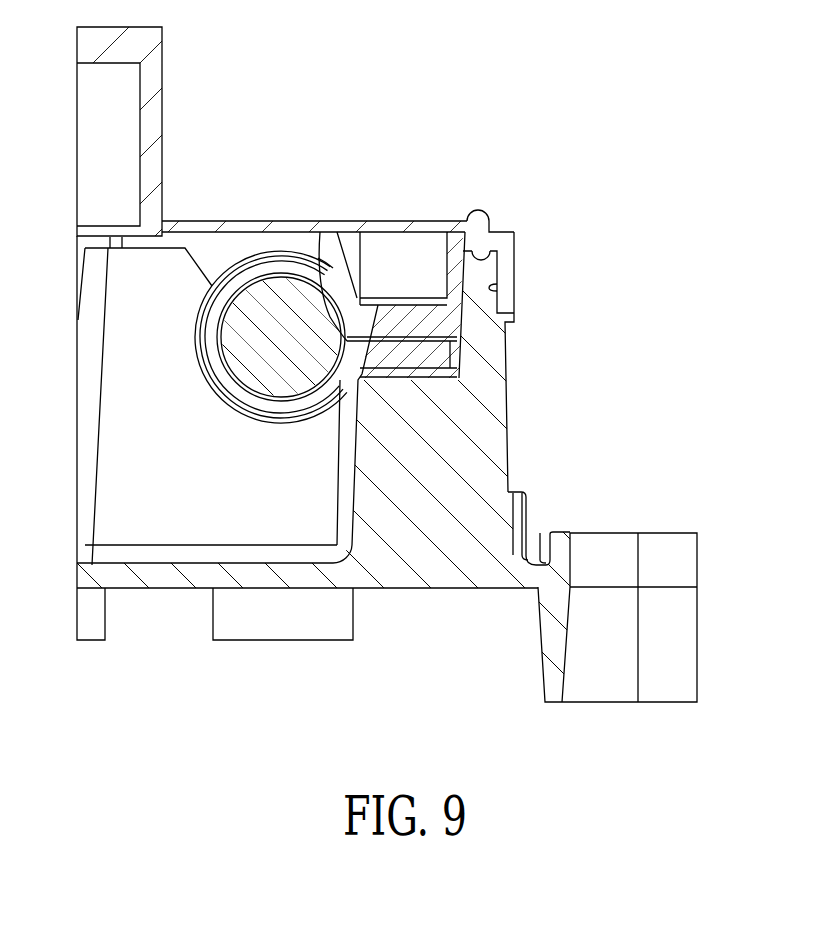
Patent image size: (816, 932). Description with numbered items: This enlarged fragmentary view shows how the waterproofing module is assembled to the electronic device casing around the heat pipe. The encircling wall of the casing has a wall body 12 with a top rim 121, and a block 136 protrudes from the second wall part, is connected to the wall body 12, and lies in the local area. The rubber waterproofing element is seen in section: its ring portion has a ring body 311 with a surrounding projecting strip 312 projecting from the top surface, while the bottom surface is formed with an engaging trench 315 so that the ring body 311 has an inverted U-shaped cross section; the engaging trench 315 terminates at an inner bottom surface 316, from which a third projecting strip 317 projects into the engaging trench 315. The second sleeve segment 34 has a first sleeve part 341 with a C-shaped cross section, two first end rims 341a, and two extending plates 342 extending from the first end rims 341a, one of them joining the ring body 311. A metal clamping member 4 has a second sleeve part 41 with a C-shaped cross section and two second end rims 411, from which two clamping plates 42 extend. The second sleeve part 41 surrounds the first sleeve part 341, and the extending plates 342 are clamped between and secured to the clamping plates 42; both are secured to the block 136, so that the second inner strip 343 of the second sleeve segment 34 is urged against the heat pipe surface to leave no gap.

The clamping member 4 is at (227, 417).
The second sleeve part 41 is at (217, 393).
The second end rims 411 is at (378, 300).
The second sleeve segment 34 is at (267, 257).
The first sleeve part 341 is at (294, 267).
The first end rims 341a is at (333, 262).
The second inner strip 343 is at (224, 274).
The clamping plates 42 is at (397, 297).
The wall body 12 is at (483, 343).
The top rim 121 is at (487, 262).
The block 136 is at (433, 472).
The ring body 311 is at (514, 233).
The surrounding projecting strip 312 is at (494, 236).
The engaging trench 315 is at (488, 288).
The inner bottom surface 316 is at (506, 242).
The third projecting strip 317 is at (476, 214).
The extending plates 342 is at (413, 315).